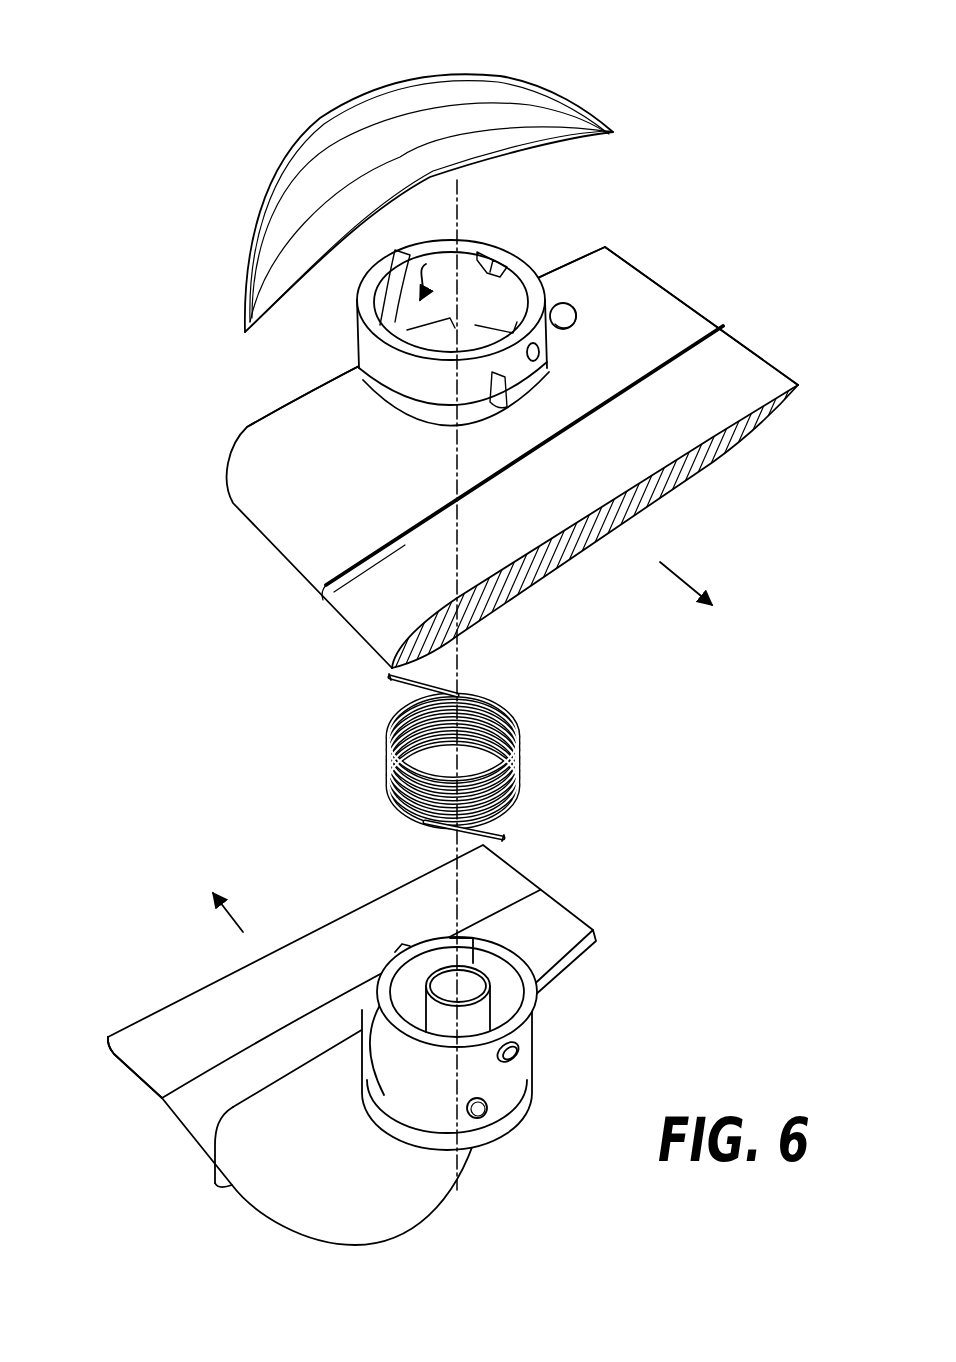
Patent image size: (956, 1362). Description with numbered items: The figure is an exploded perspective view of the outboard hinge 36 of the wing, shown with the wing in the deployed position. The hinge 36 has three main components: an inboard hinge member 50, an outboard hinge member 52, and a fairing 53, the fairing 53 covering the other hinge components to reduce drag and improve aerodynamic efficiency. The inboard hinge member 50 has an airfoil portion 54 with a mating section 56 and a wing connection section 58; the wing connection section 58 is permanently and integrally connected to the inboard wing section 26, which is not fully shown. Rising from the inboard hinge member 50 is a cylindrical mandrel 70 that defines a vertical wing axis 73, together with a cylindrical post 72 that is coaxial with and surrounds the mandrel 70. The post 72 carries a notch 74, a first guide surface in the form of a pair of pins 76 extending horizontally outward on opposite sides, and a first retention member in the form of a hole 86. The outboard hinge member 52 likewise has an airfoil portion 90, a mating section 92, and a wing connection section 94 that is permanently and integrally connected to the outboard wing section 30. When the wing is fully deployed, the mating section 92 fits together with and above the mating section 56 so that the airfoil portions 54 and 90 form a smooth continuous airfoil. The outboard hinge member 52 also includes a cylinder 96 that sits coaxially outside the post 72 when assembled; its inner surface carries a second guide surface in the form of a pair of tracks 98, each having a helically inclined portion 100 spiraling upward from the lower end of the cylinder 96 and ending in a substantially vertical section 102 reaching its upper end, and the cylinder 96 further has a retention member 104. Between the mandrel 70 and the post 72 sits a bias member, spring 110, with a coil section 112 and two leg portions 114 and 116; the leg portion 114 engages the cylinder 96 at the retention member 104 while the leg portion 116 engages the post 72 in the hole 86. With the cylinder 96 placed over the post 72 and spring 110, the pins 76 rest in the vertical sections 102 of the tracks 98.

The inboard wing section 26 is at (213, 903).
The outboard wing section 30 is at (658, 575).
The outboard hinge 36 is at (100, 141).
The inboard hinge member 50 is at (382, 1050).
The outboard hinge member 52 is at (498, 431).
The fairing 53 is at (560, 98).
The airfoil portion 54 is at (170, 1118).
The mating section 56 is at (560, 982).
The wing connection section 58 is at (125, 1028).
The cylindrical mandrel 70 is at (424, 988).
The cylindrical post 72 is at (366, 1068).
The wing axis 73 is at (458, 212).
The notch 74 is at (503, 963).
The pins 76 is at (400, 948).
The hole 86 is at (490, 1112).
The airfoil portion 90 is at (258, 500).
The mating section 92 is at (588, 256).
The wing connection section 94 is at (755, 377).
The cylinder 96 is at (541, 290).
The tracks 98 is at (436, 275).
The helically inclined portions 100 is at (360, 328).
The vertical sections 102 is at (394, 256).
The retention member 104 is at (502, 258).
The spring 110 is at (455, 760).
The coil section 112 is at (518, 757).
The leg portion 114 is at (387, 676).
The leg portion 116 is at (505, 838).